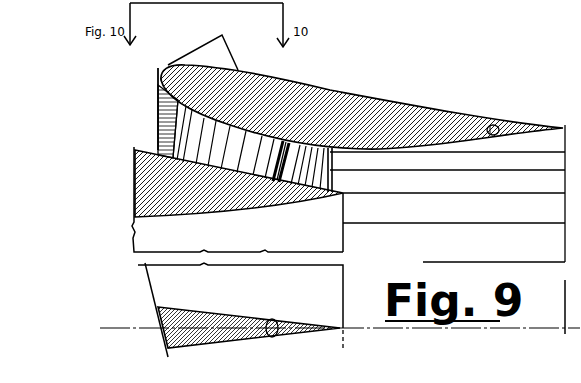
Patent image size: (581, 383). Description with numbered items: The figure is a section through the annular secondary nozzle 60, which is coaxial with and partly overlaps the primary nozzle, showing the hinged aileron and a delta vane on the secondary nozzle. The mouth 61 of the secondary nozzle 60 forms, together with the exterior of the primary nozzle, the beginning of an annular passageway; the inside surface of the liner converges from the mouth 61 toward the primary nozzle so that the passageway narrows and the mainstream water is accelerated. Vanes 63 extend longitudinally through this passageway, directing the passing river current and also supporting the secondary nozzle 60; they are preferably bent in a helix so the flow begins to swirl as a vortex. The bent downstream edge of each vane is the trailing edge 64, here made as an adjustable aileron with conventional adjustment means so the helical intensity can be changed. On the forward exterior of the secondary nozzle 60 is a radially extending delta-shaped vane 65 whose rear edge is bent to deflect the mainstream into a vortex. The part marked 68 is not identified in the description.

The secondary nozzle 60 is at (445, 111).
The mouth 61 is at (157, 78).
The vanes 63 is at (195, 131).
The trailing edge 64 is at (333, 163).
The delta-shaped vanes 65 is at (222, 36).
The shroud wall 68 is at (340, 193).